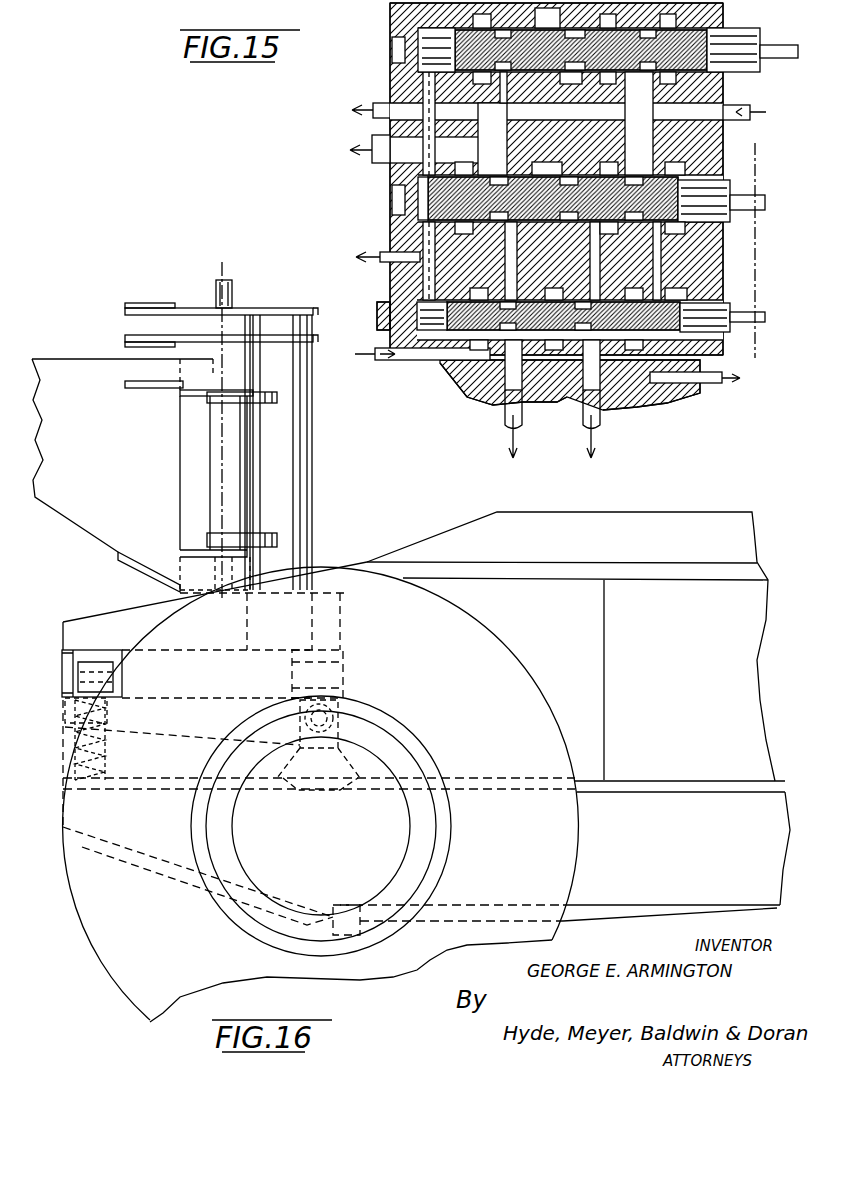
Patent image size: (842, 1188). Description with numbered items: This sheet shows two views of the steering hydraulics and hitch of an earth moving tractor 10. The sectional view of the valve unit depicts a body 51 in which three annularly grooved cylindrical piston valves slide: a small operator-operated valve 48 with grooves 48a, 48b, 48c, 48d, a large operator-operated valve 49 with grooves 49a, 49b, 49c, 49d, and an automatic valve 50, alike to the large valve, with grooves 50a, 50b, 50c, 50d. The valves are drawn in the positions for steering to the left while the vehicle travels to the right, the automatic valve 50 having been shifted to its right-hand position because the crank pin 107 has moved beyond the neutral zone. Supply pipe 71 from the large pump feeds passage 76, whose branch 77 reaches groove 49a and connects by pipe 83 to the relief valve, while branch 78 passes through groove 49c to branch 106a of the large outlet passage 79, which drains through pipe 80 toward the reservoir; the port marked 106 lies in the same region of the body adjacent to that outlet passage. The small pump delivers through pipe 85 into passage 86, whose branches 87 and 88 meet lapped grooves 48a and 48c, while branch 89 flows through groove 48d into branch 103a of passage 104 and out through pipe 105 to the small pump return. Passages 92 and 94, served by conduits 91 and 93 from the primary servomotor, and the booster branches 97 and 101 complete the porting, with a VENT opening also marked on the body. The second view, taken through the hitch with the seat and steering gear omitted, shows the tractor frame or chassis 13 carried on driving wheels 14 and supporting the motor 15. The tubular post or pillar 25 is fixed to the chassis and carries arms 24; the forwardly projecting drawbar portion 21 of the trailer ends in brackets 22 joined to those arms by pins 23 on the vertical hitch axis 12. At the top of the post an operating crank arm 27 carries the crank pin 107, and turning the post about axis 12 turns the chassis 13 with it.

In FIG. 16, the tractor 10 is at (730, 508).
In FIG. 16, the hitch axis 12 is at (222, 462).
In FIG. 16, the frame or chassis 13 is at (426, 849).
In FIG. 16, the wheels 14 is at (105, 950).
In FIG. 16, the driving or operating motor 15 is at (656, 680).
In FIG. 16, the drawbar portion 21 is at (199, 504).
In FIG. 16, the brackets or arms 22 is at (150, 380).
In FIG. 16, the pins 23 is at (195, 380).
In FIG. 16, the arms or brackets 24 is at (265, 392).
In FIG. 16, the tubular post or pillar 25 is at (300, 462).
In FIG. 16, the crank arm 27 is at (125, 338).
In FIG. 15, the small valve 48 is at (730, 308).
In FIG. 15, the annular groove 48a is at (469, 319).
In FIG. 15, the annular groove 48b is at (543, 317).
In FIG. 15, the annular groove 48c is at (595, 316).
In FIG. 15, the annular groove 48d is at (648, 317).
In FIG. 15, the large valve 49 is at (722, 182).
In FIG. 15, the annular groove 49a is at (455, 199).
In FIG. 15, the annular groove 49b is at (545, 204).
In FIG. 15, the annular groove 49c is at (608, 201).
In FIG. 15, the annular groove 49d is at (649, 203).
In FIG. 15, the automatic valve 50 is at (738, 38).
In FIG. 15, the annular groove 50a is at (481, 49).
In FIG. 15, the annular groove 50b is at (551, 51).
In FIG. 15, the annular groove 50c is at (635, 53).
In FIG. 15, the annular groove 50d is at (689, 53).
In FIG. 15, the valve body 51 is at (490, 392).
In FIG. 15, the supply pipe 71 is at (745, 123).
In FIG. 15, the passage 76 is at (728, 108).
In FIG. 15, the branch 77 is at (484, 126).
In FIG. 15, the branch 78 is at (622, 143).
In FIG. 15, the outlet passage 79 is at (435, 150).
In FIG. 15, the pipe 80 is at (380, 164).
In FIG. 15, the pipe 83 is at (388, 107).
In FIG. 15, the pipe 85 is at (388, 363).
In FIG. 15, the passage 86 is at (430, 362).
In FIG. 15, the branch 87 is at (468, 378).
In FIG. 15, the branch 88 is at (608, 348).
In FIG. 15, the branch 89 is at (640, 350).
In FIG. 15, the conduit 91 is at (520, 413).
In FIG. 15, the passage 92 is at (500, 262).
In FIG. 15, the conduit 93 is at (598, 420).
In FIG. 15, the passage 94 is at (606, 272).
In FIG. 15, the branch 97 is at (486, 90).
In FIG. 15, the branch 101 is at (549, 23).
In FIG. 15, the branch 103a is at (648, 346).
In FIG. 15, the passage 104 is at (700, 380).
In FIG. 15, the pipe 105 is at (715, 372).
In FIG. 15, the port 106 is at (547, 176).
In FIG. 15, the branch 106a is at (640, 170).
In FIG. 16, the crank pin 107 is at (235, 288).
In FIG. 15, the vent port VENT is at (368, 256).